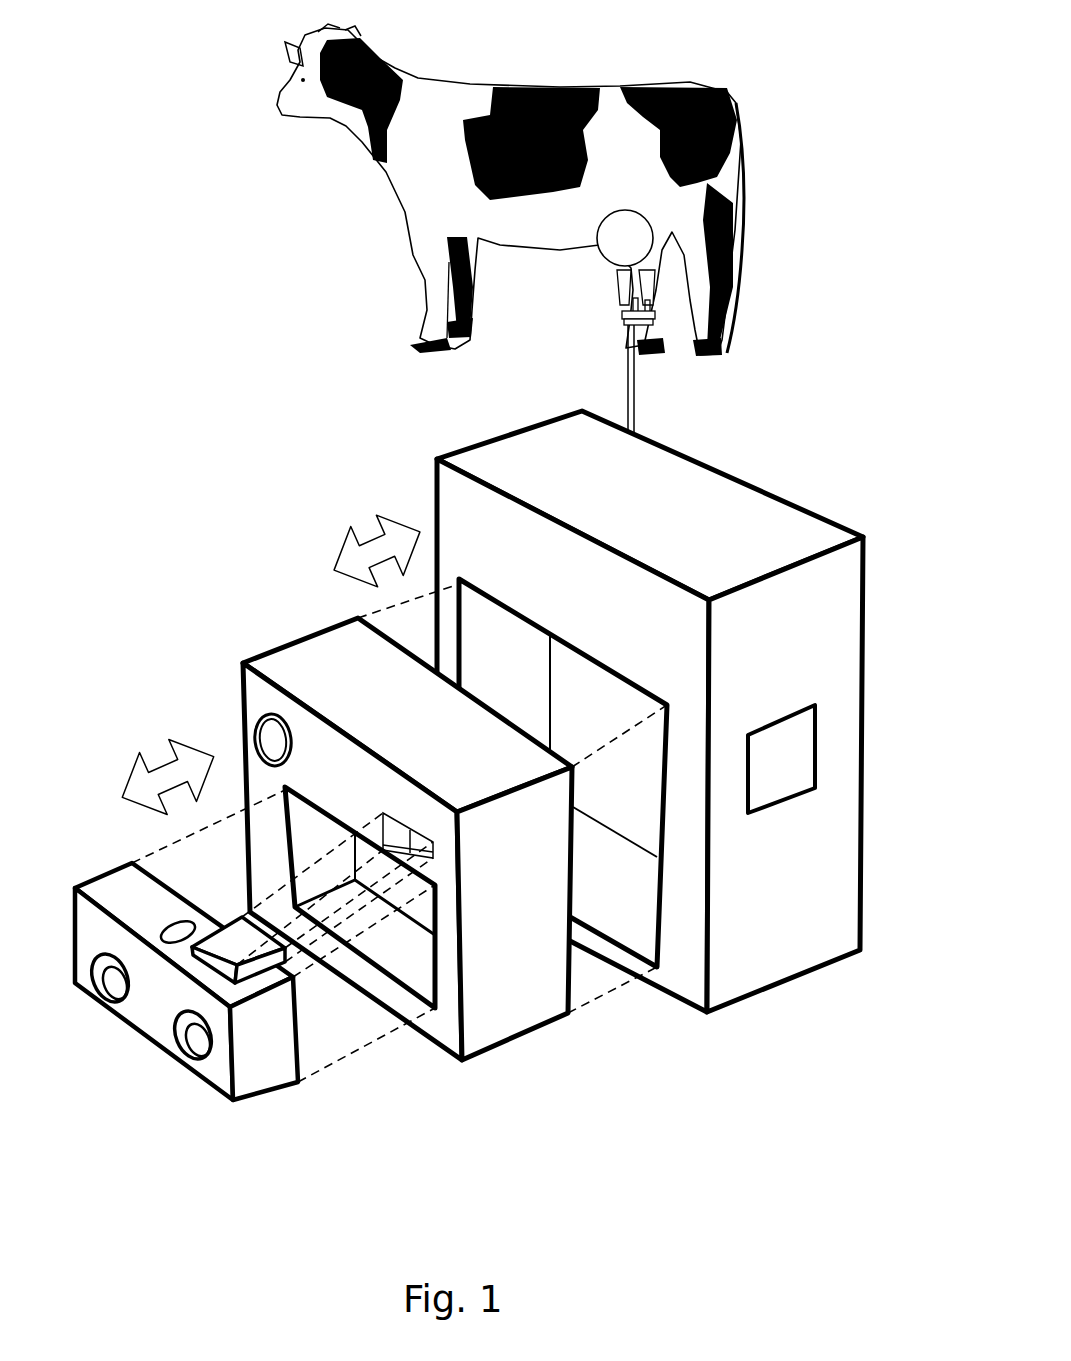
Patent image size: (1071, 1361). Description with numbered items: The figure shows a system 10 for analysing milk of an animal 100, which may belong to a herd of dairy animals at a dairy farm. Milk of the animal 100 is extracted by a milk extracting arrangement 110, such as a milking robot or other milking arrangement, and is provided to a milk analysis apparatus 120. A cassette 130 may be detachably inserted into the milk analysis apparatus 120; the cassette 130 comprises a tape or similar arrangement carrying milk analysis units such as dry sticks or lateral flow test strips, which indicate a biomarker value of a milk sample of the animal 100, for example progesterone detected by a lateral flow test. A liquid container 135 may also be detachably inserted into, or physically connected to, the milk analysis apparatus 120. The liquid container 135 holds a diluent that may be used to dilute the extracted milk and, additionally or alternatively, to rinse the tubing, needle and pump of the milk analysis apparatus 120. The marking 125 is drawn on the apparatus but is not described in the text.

The system 10 is at (52, 66).
The animal 100 is at (718, 92).
The milk extracting arrangement 110 is at (837, 603).
The milk analysis apparatus 120 is at (374, 860).
The identification label 125 is at (258, 717).
The cassette 130 is at (248, 1075).
The liquid container 135 is at (247, 945).